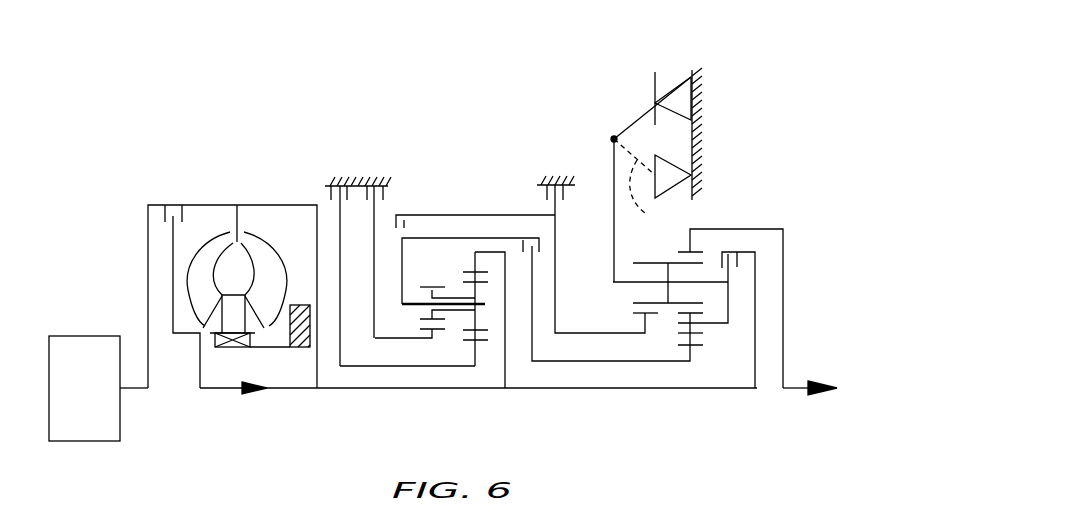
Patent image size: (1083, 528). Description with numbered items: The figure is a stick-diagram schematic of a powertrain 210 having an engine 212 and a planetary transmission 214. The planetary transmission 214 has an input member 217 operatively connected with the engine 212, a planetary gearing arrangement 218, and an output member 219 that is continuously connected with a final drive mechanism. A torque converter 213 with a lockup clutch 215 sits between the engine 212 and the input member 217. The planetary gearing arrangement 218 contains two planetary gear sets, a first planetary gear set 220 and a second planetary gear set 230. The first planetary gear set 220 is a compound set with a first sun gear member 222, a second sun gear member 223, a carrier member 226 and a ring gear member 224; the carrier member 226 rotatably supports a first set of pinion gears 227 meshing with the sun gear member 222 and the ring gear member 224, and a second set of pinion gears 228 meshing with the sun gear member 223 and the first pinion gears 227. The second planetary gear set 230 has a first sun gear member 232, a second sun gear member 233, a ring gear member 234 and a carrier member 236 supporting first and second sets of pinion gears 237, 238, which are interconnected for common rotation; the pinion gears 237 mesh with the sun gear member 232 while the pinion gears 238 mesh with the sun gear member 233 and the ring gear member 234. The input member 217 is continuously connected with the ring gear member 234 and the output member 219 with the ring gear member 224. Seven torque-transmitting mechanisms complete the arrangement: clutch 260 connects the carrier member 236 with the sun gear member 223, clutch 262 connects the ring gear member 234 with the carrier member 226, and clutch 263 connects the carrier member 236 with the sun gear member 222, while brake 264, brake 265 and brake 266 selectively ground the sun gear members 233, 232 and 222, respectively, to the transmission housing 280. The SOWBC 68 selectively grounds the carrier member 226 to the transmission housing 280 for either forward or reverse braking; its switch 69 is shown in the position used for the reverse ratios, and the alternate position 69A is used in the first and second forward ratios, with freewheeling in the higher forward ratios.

The engine 212 is at (98, 388).
The torque converter 213 is at (184, 351).
The lockup clutch 215 is at (163, 230).
The input member 217 is at (292, 390).
The planetary gearing arrangement 218 is at (470, 123).
The output member 219 is at (793, 397).
The first planetary gear set 220 is at (708, 360).
The first sun gear member 222 is at (653, 315).
The second sun gear member 223 is at (698, 347).
The ring gear member 224 is at (683, 247).
The carrier member 226 is at (712, 322).
The first set of pinion gears 227 is at (663, 275).
The second set of pinion gears 228 is at (703, 333).
The second planetary gear set 230 is at (476, 370).
The first sun gear member 232 is at (436, 337).
The second sun gear member 233 is at (468, 343).
The ring gear member 234 is at (470, 270).
The carrier member 236 is at (417, 307).
The first set of pinion gears 237 is at (432, 292).
The second set of pinion gears 238 is at (477, 290).
The first clutch 260 is at (537, 262).
The third clutch 262 is at (742, 277).
The second clutch 263 is at (421, 227).
The brake 264 is at (321, 195).
The brake 265 is at (394, 187).
The first brake 266 is at (535, 199).
The transmission housing 280 is at (300, 304).
The SOWBC 68 is at (627, 78).
The switch 69 is at (633, 118).
The switch position 69A is at (637, 190).
The powertrain 210 is at (759, 61).
The planetary transmission 214 is at (759, 106).